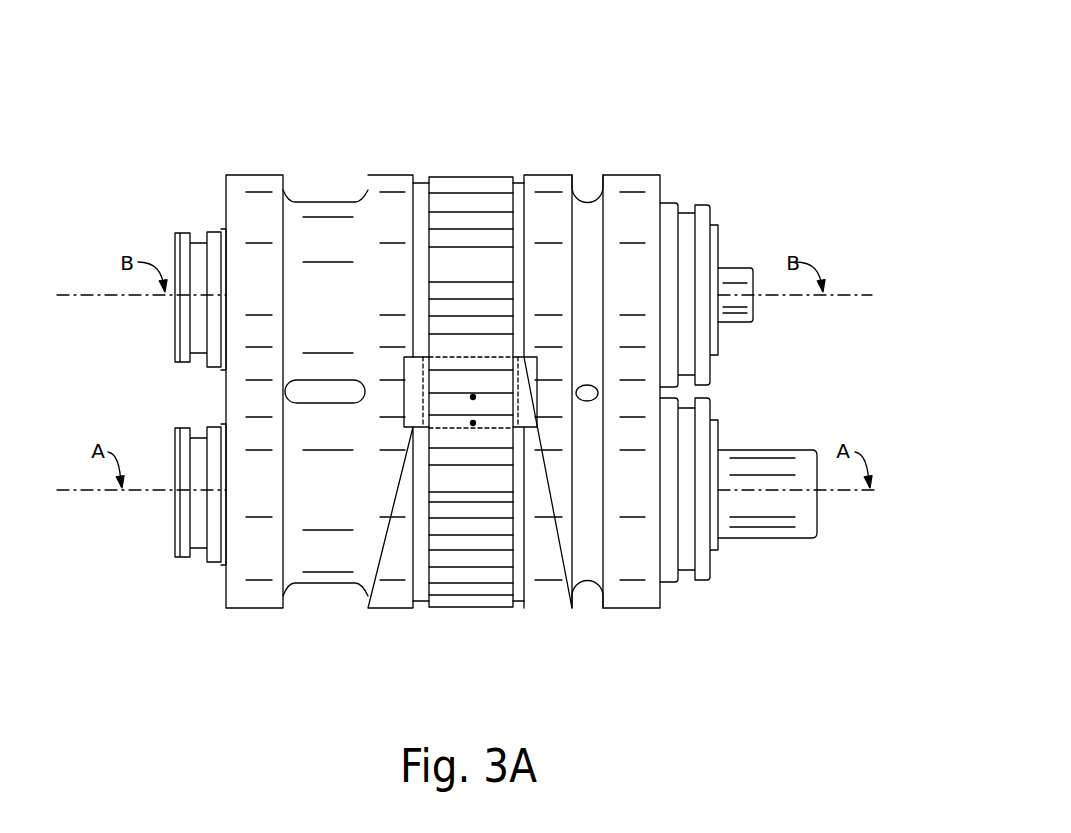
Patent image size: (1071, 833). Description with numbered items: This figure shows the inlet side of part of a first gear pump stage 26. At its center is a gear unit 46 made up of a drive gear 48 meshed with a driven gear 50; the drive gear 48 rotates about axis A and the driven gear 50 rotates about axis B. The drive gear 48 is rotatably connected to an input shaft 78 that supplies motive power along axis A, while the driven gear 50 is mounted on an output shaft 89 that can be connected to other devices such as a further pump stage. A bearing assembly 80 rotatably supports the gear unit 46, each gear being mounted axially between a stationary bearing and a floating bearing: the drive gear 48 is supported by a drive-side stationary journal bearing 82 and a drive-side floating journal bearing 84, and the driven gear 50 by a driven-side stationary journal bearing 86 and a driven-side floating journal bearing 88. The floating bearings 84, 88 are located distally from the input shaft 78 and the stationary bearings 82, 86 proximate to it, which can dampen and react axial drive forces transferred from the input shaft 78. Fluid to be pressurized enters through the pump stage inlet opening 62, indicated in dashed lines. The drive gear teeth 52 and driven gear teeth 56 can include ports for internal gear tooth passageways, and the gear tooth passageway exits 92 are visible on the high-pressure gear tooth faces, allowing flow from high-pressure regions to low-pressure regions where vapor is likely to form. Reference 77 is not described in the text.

The first gear pump stage 26 is at (745, 108).
The gear unit 46 is at (513, 133).
The drive gear 48 is at (481, 609).
The driven gear 50 is at (488, 174).
The drive gear teeth 52 is at (511, 480).
The driven gear teeth 56 is at (511, 265).
The pump stage inlet opening 62 is at (425, 357).
The engagement member 77 is at (477, 382).
The input shaft 78 is at (790, 538).
The bearing assembly 80 is at (617, 162).
The drive-side stationary journal bearing 82 is at (638, 608).
The drive-side floating journal bearing 84 is at (247, 608).
The driven-side stationary journal bearing 86 is at (625, 175).
The driven-side floating journal bearing 88 is at (253, 175).
The output shaft 89 is at (737, 267).
The gear tooth passageway exits 92 is at (471, 424).